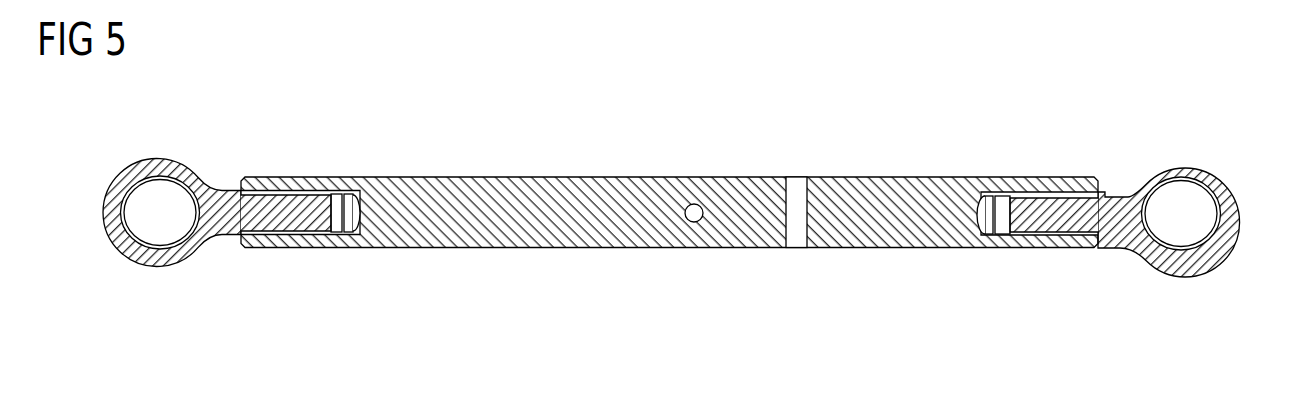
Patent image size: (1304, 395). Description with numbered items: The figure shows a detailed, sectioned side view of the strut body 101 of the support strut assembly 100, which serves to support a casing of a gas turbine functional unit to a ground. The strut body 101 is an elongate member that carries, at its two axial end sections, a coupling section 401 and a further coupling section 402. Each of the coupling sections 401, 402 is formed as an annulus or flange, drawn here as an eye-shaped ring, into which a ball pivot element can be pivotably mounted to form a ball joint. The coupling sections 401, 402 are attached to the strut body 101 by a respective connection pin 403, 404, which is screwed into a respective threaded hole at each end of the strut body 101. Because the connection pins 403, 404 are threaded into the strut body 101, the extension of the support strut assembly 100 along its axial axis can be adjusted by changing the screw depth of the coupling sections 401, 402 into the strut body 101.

The support strut assembly 100 is at (925, 128).
The strut body 101 is at (550, 192).
The coupling section 401 is at (1178, 167).
The further coupling section 402 is at (158, 163).
The connection pin 403 is at (280, 203).
The connection pin 404 is at (1058, 202).